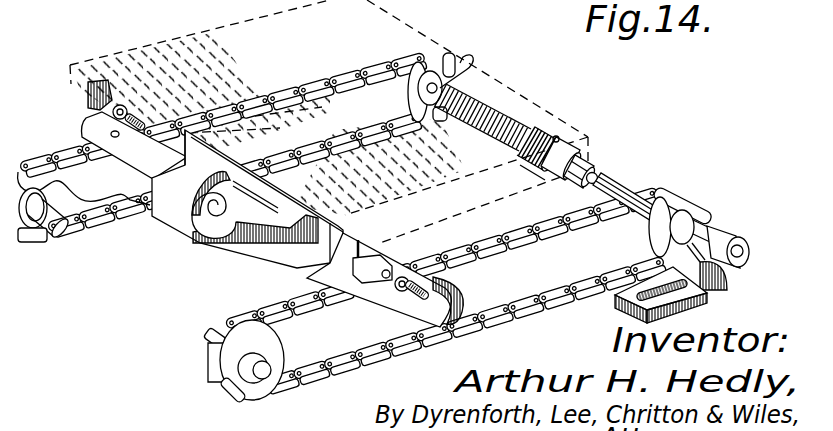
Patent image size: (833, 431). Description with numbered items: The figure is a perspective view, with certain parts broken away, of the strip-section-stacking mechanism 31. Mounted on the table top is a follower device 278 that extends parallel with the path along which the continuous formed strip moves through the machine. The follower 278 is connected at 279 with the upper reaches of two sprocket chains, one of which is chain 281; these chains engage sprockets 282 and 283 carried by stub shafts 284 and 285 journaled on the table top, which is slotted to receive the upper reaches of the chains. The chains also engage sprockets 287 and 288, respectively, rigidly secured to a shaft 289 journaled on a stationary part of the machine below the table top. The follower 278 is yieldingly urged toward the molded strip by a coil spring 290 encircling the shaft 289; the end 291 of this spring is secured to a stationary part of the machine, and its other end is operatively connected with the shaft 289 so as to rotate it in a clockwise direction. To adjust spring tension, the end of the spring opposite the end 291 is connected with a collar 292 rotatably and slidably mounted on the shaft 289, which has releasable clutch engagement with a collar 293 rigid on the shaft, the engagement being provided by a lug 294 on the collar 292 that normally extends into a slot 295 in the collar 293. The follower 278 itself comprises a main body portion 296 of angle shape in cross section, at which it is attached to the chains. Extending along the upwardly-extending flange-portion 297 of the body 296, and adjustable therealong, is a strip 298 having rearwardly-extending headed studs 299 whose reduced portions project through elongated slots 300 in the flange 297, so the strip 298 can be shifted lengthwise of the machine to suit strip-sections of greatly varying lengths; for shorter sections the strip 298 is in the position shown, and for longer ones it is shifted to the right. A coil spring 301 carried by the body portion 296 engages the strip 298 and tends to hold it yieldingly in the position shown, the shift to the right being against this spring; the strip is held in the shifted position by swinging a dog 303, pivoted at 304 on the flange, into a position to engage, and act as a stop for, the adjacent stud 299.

The strip-section-stacking mechanism 31 is at (277, 257).
The follower device 278 is at (183, 213).
The connection of follower to chains 279 is at (112, 132).
The sprocket chain 281 is at (127, 193).
The sprocket 282 is at (282, 372).
The sprocket 283 is at (113, 214).
The stub shaft 284 is at (253, 372).
The stub shaft 285 is at (43, 242).
The sprocket 287 is at (652, 235).
The sprocket 288 is at (408, 86).
The shaft 289 is at (614, 185).
The coil spring 290 is at (468, 113).
The end of coil spring 291 is at (468, 62).
The collar 292 is at (538, 128).
The collar 293 is at (572, 152).
The lug 294 is at (537, 162).
The slot 295 is at (557, 137).
The main body portion 296 is at (323, 273).
The flange-portion 297 is at (435, 300).
The strip 298 is at (90, 88).
The headed stud 299 is at (121, 105).
The elongated slot 300 is at (137, 118).
The coil spring 301 is at (233, 240).
The dog 303 is at (358, 257).
The pivot 304 is at (382, 268).